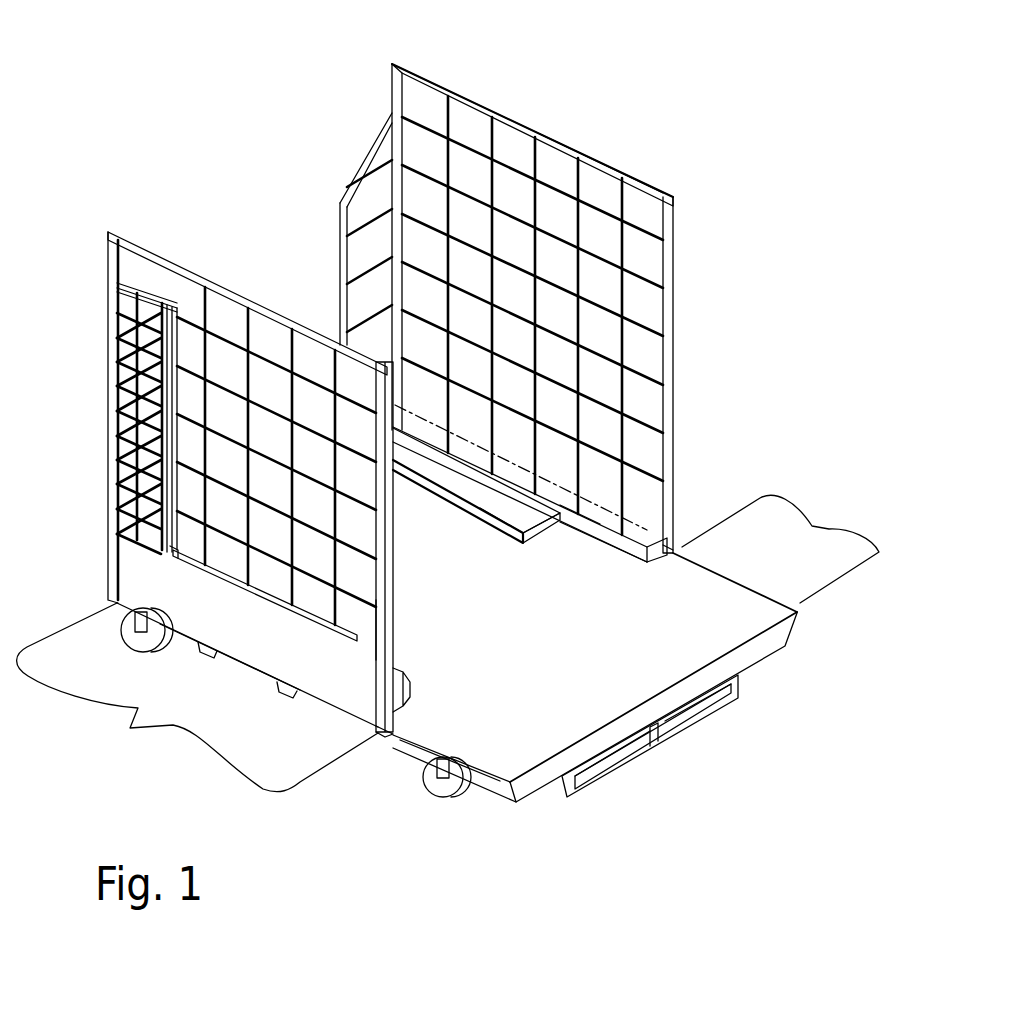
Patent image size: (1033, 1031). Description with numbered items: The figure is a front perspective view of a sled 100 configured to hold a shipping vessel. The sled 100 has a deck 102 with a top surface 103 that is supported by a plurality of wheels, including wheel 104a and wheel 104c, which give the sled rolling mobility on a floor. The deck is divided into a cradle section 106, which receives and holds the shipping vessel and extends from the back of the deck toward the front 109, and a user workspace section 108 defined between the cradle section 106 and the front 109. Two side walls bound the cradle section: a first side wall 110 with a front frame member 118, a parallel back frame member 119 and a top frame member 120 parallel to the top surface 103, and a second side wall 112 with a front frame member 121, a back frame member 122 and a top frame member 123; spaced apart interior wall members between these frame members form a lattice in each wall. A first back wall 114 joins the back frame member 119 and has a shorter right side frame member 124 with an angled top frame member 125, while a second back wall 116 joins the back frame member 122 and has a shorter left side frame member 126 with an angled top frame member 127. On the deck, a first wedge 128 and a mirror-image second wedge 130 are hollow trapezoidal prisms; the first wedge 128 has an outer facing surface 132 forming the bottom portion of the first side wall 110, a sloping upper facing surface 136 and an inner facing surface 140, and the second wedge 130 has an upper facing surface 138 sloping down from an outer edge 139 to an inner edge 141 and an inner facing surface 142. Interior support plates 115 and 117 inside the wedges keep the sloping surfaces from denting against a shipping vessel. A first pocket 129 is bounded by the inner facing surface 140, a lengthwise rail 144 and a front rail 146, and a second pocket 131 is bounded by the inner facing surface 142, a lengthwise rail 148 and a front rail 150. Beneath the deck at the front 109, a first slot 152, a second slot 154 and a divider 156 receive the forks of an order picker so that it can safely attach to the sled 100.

The sled 100 is at (600, 95).
The deck 102 is at (720, 563).
The top surface 103 is at (725, 672).
The wheel 104a is at (455, 800).
The wheel 104c is at (145, 652).
The cradle section 106 is at (197, 697).
The user workspace section 108 is at (780, 546).
The front 109 is at (773, 638).
The first side wall 110 is at (245, 285).
The second side wall 112 is at (428, 72).
The first back wall 114 is at (130, 272).
The interior support plate 115 is at (670, 542).
The second back wall 116 is at (362, 135).
The interior support plate 117 is at (393, 735).
The front frame member 118 is at (392, 535).
The back frame member 119 is at (108, 360).
The top frame member 120 is at (270, 300).
The front frame member 121 is at (672, 265).
The back frame member 122 is at (388, 67).
The top frame member 123 is at (598, 157).
The right side frame member 124 is at (178, 330).
The top frame member 125 is at (163, 275).
The left side frame member 126 is at (338, 262).
The top frame member 127 is at (335, 165).
The first wedge 128 is at (408, 680).
The first pocket 129 is at (175, 553).
The second wedge 130 is at (607, 553).
The second pocket 131 is at (465, 480).
The outer facing surface 132 is at (320, 672).
The upper facing surface 136 is at (395, 672).
The upper facing surface 138 is at (638, 497).
The outer edge 139 is at (455, 387).
The inner facing surface 140 is at (410, 705).
The inner edge 141 is at (487, 470).
The inner facing surface 142 is at (575, 522).
The lengthwise rail 144 is at (230, 560).
The front rail 146 is at (370, 640).
The lengthwise rail 148 is at (495, 520).
The front rail 150 is at (545, 537).
The first slot 152 is at (610, 765).
The second slot 154 is at (707, 710).
The divider 156 is at (655, 735).